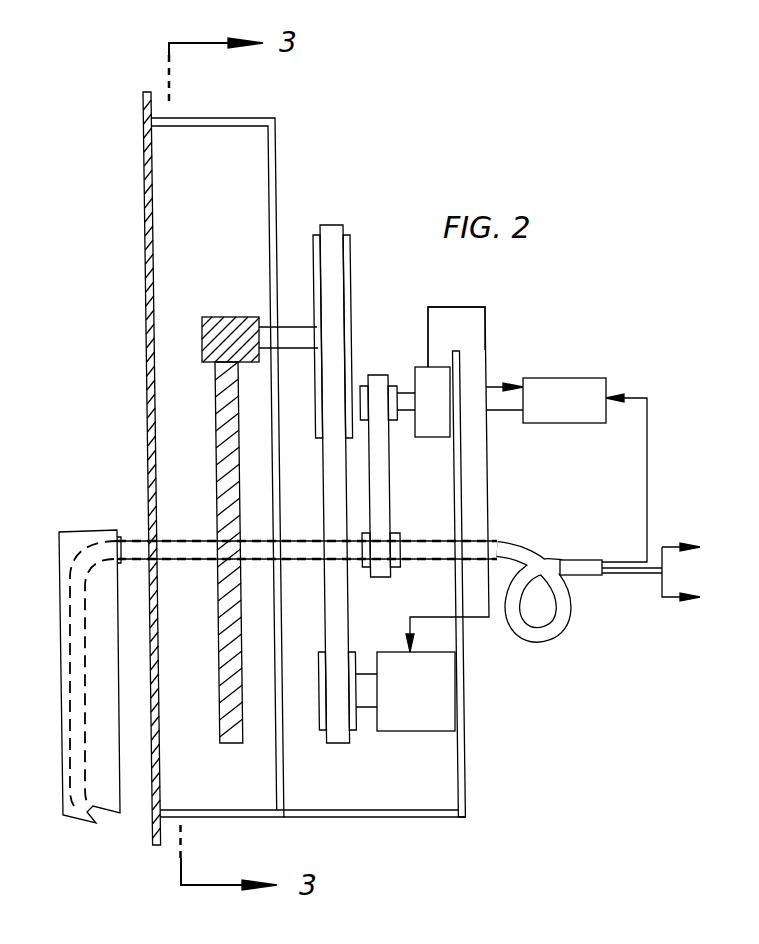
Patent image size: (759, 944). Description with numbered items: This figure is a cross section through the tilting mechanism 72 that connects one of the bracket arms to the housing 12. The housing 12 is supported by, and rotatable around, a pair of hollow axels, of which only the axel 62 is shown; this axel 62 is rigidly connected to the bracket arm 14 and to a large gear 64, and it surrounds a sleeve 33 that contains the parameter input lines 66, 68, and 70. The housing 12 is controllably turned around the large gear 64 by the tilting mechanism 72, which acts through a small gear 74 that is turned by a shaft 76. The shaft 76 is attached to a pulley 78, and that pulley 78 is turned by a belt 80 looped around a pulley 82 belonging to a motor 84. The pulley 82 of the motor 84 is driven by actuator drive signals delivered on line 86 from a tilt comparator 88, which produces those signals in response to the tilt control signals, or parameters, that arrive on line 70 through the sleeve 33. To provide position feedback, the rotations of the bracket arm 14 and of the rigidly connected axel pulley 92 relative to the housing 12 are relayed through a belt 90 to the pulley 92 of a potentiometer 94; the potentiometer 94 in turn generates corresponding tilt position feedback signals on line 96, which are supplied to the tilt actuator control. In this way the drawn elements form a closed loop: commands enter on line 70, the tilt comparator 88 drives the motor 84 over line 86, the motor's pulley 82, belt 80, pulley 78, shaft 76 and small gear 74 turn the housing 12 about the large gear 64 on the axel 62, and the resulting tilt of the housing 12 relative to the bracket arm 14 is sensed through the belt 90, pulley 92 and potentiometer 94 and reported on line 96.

The housing 12 is at (148, 420).
The bracket arm 14 is at (78, 555).
The sleeve 33 is at (75, 685).
The axel 62 is at (133, 540).
The large gear 64 is at (229, 738).
The parameter input line 66 is at (667, 600).
The parameter input line 68 is at (668, 547).
The line 70 is at (647, 442).
The tilting mechanism 72 is at (412, 200).
The small gear 74 is at (226, 330).
The shaft 76 is at (295, 326).
The pulley 78 is at (352, 298).
The belt 80 is at (340, 637).
The pulley 82 is at (353, 732).
The motor 84 is at (398, 720).
The line 86 is at (488, 493).
The tilt comparator 88 is at (560, 378).
The belt 90 is at (383, 478).
The pulley 92 is at (394, 386).
The potentiometer 94 is at (422, 372).
The line 96 is at (452, 307).